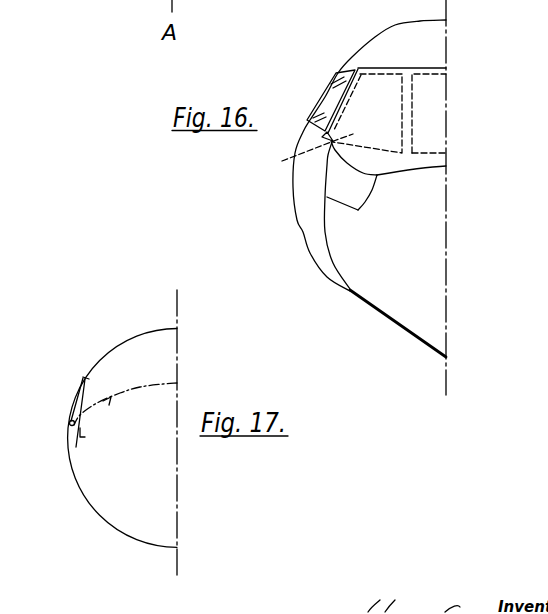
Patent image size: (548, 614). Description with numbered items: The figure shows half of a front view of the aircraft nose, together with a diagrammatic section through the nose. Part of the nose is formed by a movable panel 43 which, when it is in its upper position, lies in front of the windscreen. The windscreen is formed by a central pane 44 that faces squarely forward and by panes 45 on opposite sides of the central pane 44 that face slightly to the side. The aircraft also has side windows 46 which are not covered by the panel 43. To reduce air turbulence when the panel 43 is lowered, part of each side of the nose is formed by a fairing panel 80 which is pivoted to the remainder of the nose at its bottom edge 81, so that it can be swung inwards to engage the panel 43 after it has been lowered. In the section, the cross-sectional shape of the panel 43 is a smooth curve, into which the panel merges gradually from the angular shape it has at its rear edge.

In FIG. 16, the movable panel 43 is at (422, 80).
In FIG. 17, the movable panel 43 is at (117, 343).
In FIG. 16, the central pane 44 is at (440, 117).
In FIG. 16, the panes 45 is at (306, 154).
In FIG. 16, the side windows 46 is at (334, 88).
In FIG. 16, the fairing panel 80 is at (342, 190).
In FIG. 17, the fairing panel 80 is at (81, 392).
In FIG. 17, the bottom edge 81 is at (69, 424).